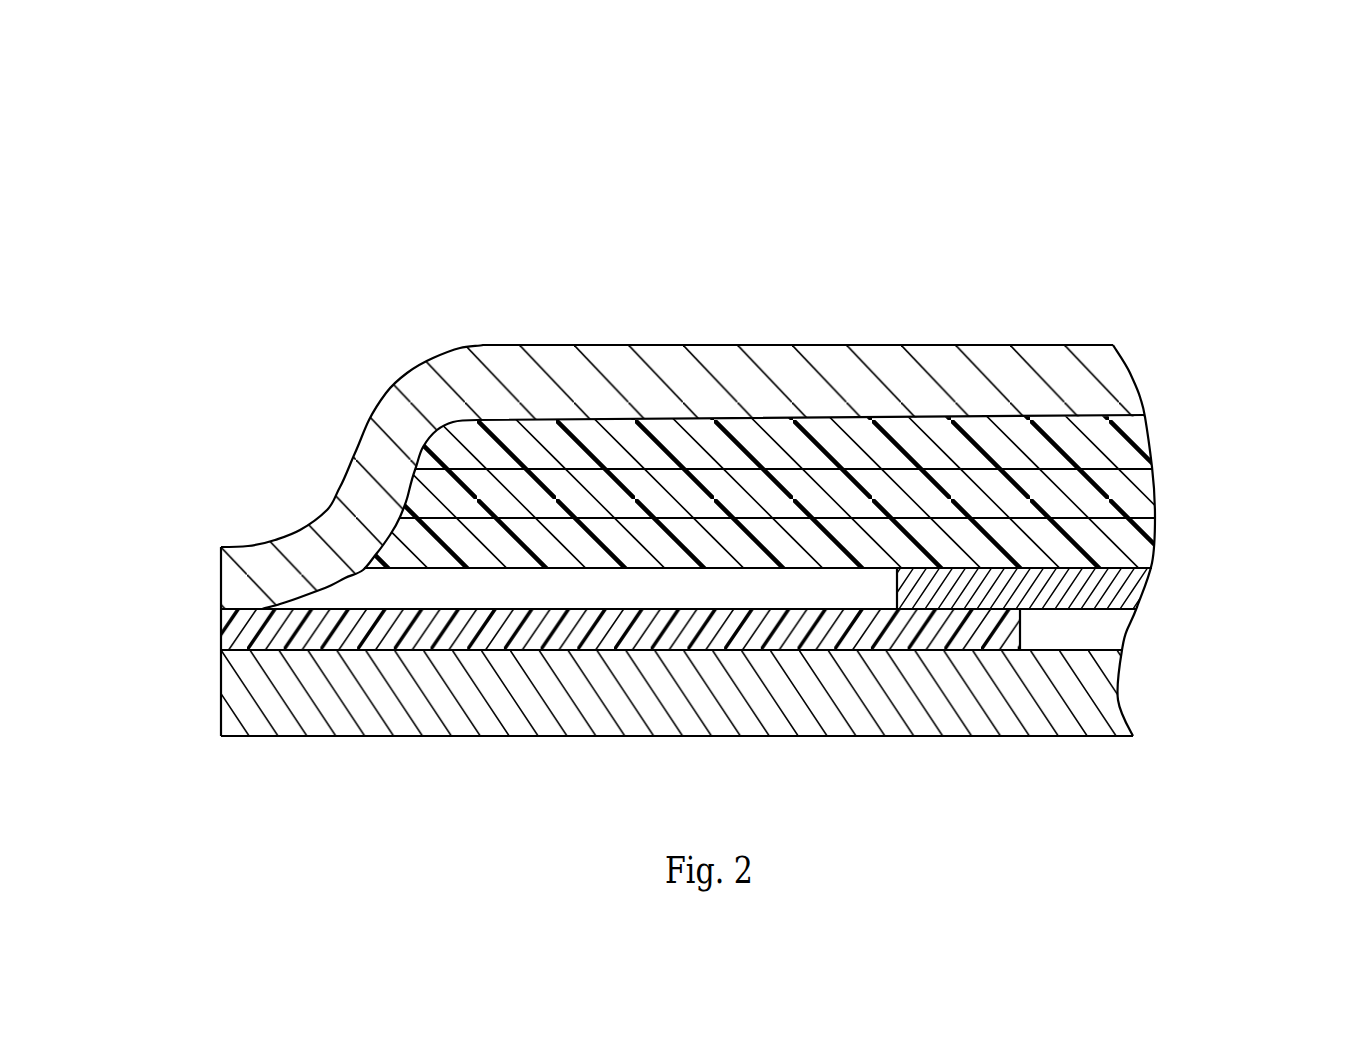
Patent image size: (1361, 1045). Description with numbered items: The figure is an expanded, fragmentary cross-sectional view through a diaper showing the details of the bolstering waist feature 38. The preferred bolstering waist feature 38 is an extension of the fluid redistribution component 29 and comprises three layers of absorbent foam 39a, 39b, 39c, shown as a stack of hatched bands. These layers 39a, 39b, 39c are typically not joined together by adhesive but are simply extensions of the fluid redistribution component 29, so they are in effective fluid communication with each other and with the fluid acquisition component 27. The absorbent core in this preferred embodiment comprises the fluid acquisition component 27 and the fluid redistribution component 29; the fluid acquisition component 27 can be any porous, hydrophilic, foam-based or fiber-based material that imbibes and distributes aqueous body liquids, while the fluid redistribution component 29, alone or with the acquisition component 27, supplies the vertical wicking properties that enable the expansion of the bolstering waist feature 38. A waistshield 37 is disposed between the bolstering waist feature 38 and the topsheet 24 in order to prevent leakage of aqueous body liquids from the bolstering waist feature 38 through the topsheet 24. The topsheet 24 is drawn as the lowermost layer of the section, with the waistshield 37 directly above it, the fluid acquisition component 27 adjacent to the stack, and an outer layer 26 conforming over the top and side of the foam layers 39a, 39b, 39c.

The topsheet 24 is at (1007, 708).
The passivation layer 26 is at (402, 418).
The fluid acquisition component 27 is at (1118, 587).
The fluid redistribution component 29 is at (1173, 463).
The waistshield 37 is at (276, 620).
The bolstering waist feature 38 is at (598, 483).
The absorbent foam layer 39a is at (755, 538).
The absorbent foam layer 39b is at (795, 487).
The absorbent foam layer 39c is at (880, 432).